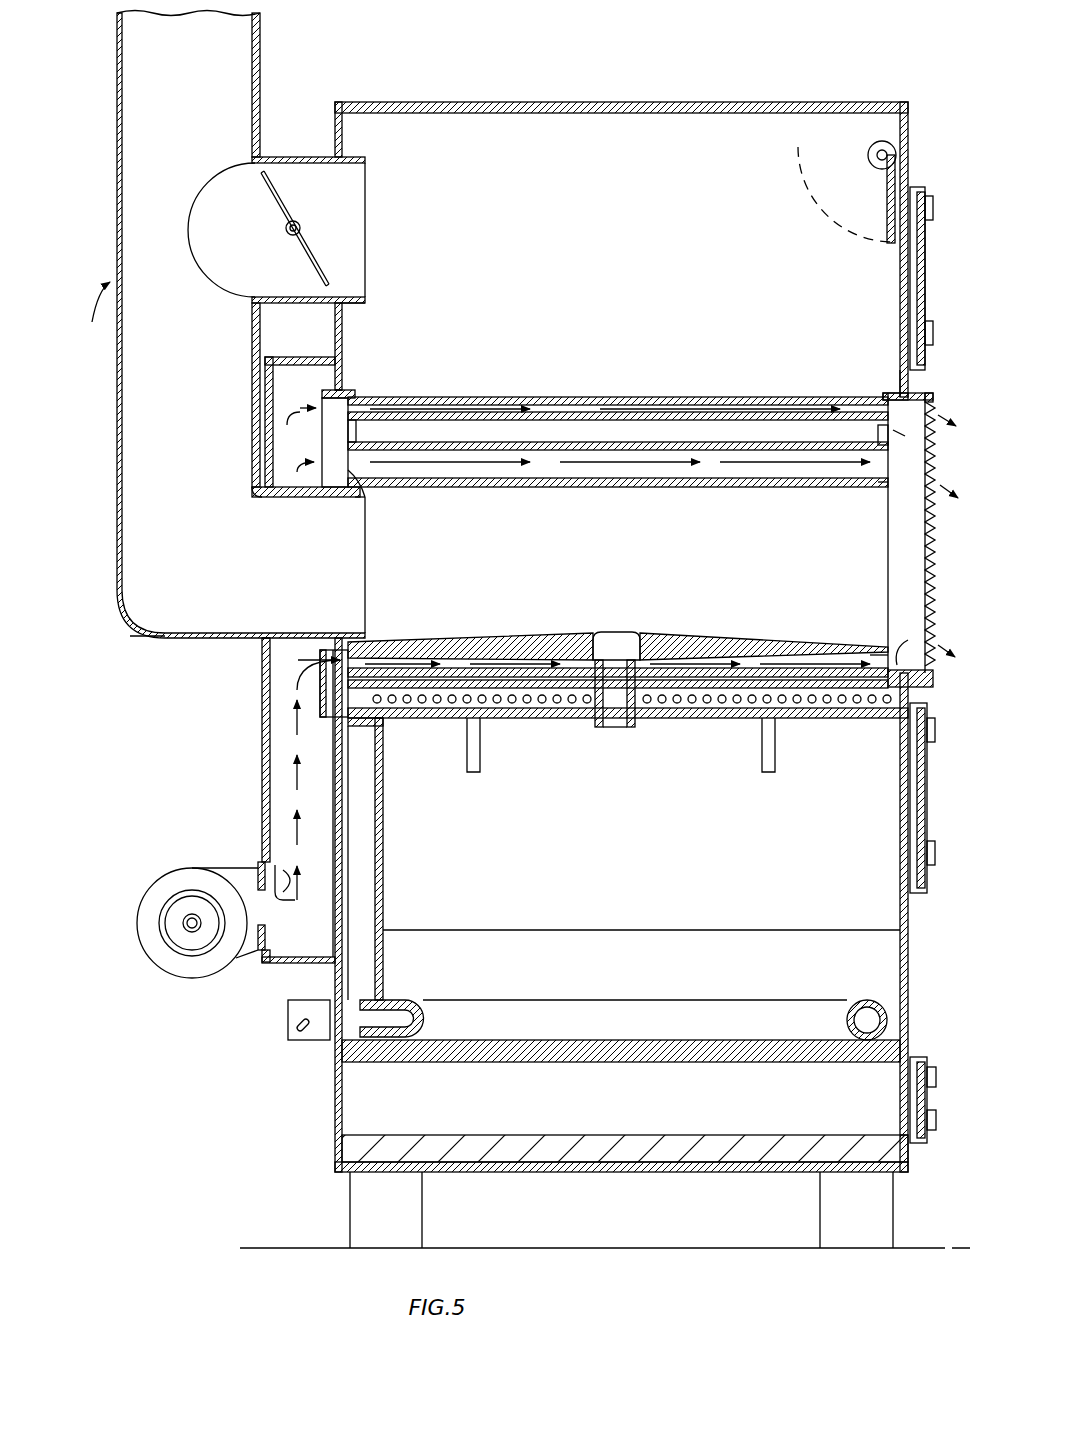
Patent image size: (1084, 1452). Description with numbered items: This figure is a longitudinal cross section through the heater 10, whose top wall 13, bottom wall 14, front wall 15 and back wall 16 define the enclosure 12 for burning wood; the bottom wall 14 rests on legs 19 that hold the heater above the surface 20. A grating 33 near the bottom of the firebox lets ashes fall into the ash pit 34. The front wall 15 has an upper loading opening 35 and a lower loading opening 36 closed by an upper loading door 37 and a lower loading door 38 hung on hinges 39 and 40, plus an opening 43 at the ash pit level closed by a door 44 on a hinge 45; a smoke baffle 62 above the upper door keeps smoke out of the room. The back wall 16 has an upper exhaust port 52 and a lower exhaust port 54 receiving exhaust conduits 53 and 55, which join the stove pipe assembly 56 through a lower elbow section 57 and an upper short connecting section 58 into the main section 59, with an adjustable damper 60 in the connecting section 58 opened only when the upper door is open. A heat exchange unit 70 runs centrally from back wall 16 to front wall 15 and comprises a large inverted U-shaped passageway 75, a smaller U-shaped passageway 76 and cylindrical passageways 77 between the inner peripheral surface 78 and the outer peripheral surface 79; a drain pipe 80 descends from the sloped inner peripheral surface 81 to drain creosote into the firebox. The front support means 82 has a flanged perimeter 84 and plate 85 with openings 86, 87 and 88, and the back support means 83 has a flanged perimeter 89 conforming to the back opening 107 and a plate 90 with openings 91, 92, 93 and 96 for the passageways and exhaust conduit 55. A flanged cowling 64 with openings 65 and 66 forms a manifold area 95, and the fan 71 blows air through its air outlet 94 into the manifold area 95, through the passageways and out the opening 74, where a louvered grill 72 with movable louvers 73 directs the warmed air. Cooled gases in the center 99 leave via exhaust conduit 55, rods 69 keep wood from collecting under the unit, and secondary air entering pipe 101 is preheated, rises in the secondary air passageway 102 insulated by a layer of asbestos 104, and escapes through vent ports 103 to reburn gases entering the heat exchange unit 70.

The heater 10 is at (672, 80).
The enclosure 12 is at (584, 221).
The top wall 13 is at (500, 103).
The bottom wall 14 is at (595, 1172).
The front wall 15 is at (908, 132).
The back wall 16 is at (335, 135).
The legs 19 is at (366, 1223).
The surface 20 is at (605, 1261).
The grating 33 is at (428, 1062).
The ash pit 34 is at (500, 1110).
The upper loading opening 35 is at (903, 362).
The lower loading opening 36 is at (903, 882).
The upper loading door 37 is at (922, 292).
The lower loading door 38 is at (927, 810).
The hinge 39 is at (933, 208).
The hinge 40 is at (935, 718).
The opening 43 is at (905, 1138).
The door 44 is at (920, 1060).
The hinge 45 is at (936, 1087).
The upper exhaust port 52 is at (355, 156).
The exhaust conduit 53 is at (358, 304).
The lower exhaust port 54 is at (264, 642).
The exhaust conduit 55 is at (370, 636).
The stove pipe assembly 56 is at (90, 314).
The lower elbow section 57 is at (130, 636).
The upper short connecting section 58 is at (320, 303).
The main section 59 is at (117, 130).
The adjustable damper 60 is at (282, 190).
The smoke baffle 62 is at (887, 215).
The flanged cowling 64 is at (262, 690).
The opening 65 is at (262, 862).
The opening 66 is at (262, 497).
The rods 69 is at (480, 752).
The heat exchange unit 70 is at (640, 388).
The fan 71 is at (192, 982).
The louvered grill 72 is at (935, 565).
The movable louvers 73 is at (936, 615).
The opening 74 is at (930, 398).
The passageway 75 is at (400, 400).
The passageway 76 is at (875, 655).
The passageways 77 is at (620, 488).
The inner peripheral surface 78 is at (630, 420).
The outer peripheral surface 79 is at (430, 680).
The drain pipe 80 is at (637, 722).
The inner peripheral surface 81 is at (480, 645).
The front support means 82 is at (890, 562).
The back support means 83 is at (326, 400).
The flanged perimeter 84 is at (890, 398).
The plate 85 is at (878, 438).
The opening 86 is at (907, 438).
The opening 87 is at (898, 645).
The openings 88 is at (890, 488).
The flanged perimeter 89 is at (342, 396).
The plate 90 is at (357, 433).
The opening 91 is at (294, 440).
The opening 92 is at (360, 726).
The openings 93 is at (368, 488).
The air outlet 94 is at (276, 920).
The manifold area 95 is at (270, 718).
The opening 96 is at (360, 500).
The center 99 is at (653, 575).
The pipe 101 is at (300, 1042).
The secondary air passageway 102 is at (383, 830).
The vent ports 103 is at (515, 710).
The layer of asbestos 104 is at (345, 790).
The back opening 107 is at (355, 760).